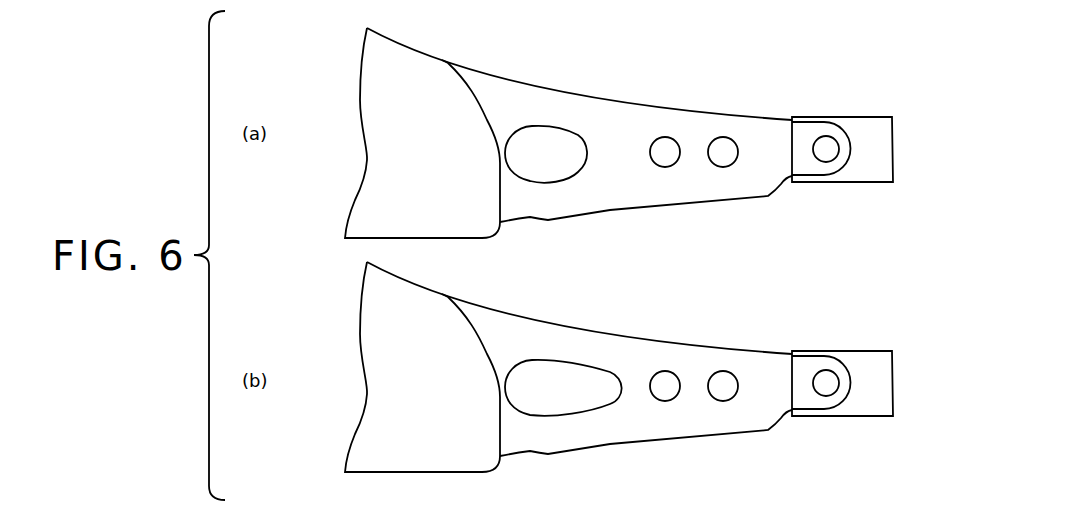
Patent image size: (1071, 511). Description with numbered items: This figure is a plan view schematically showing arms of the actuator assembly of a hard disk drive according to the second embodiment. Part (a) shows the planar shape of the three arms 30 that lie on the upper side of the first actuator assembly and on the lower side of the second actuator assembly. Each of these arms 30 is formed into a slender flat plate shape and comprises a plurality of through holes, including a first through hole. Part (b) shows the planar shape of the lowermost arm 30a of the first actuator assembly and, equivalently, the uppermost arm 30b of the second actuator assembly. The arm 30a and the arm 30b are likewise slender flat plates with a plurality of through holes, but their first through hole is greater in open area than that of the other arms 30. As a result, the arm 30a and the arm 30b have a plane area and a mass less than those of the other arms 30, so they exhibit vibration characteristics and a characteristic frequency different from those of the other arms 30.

The arm 30 is at (638, 118).
The lowermost arm 30a is at (579, 359).
The uppermost arm 30b is at (579, 359).